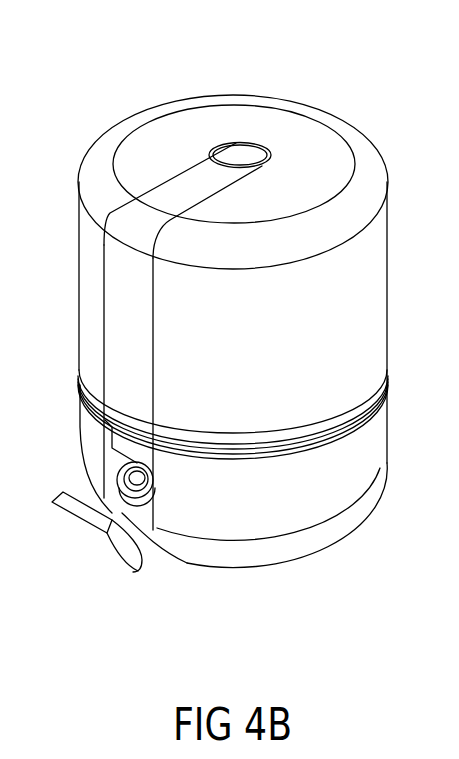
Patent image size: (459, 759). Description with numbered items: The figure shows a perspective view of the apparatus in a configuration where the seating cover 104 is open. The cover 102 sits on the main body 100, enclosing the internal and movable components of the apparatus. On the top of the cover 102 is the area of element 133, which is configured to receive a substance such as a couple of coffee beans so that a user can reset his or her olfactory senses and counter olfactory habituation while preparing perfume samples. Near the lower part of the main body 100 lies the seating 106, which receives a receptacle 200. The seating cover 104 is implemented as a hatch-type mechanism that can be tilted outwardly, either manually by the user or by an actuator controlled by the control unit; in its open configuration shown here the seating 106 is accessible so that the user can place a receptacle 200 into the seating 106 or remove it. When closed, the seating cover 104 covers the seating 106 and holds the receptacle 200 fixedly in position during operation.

The main body 100 is at (312, 483).
The cover 102 is at (305, 157).
The element 133 is at (240, 153).
The seating 106 is at (118, 460).
The seating cover 104 is at (82, 510).
The receptacle 200 is at (140, 560).